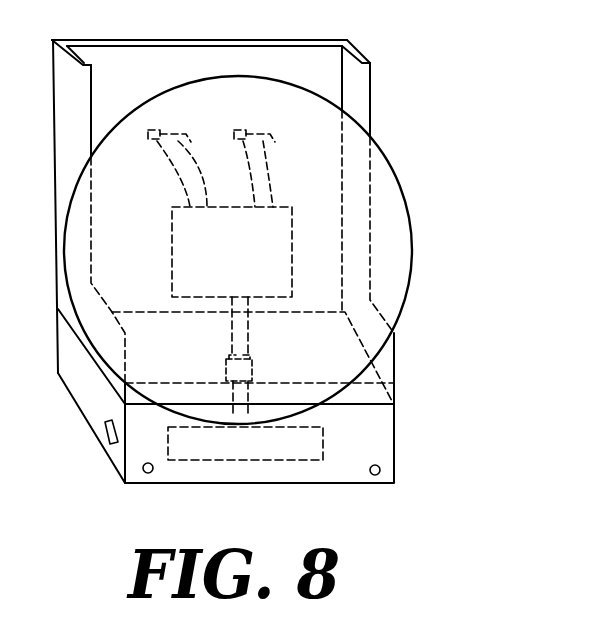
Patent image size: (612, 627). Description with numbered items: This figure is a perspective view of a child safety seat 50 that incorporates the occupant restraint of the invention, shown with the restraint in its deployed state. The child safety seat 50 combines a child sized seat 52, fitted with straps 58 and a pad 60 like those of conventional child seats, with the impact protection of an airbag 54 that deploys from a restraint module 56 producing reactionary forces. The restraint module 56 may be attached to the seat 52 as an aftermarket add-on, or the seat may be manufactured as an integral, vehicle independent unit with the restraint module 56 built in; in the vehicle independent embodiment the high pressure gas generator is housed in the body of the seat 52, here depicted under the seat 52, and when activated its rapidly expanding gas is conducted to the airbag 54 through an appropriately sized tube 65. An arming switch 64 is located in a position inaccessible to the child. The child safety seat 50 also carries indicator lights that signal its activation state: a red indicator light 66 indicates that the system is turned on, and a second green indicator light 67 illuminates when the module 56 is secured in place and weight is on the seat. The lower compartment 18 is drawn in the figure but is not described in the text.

The battery / power supply compartment 18 is at (272, 451).
The child safety seat 50 is at (402, 119).
The child sized seat 52 is at (320, 63).
The airbag 54 is at (400, 242).
The restraint module 56 is at (255, 265).
The straps 58 is at (184, 163).
The pad 60 is at (223, 314).
The arming switch 64 is at (104, 432).
The tube 65 is at (252, 394).
The indicator light 66 is at (152, 476).
The second indicator light 67 is at (398, 472).